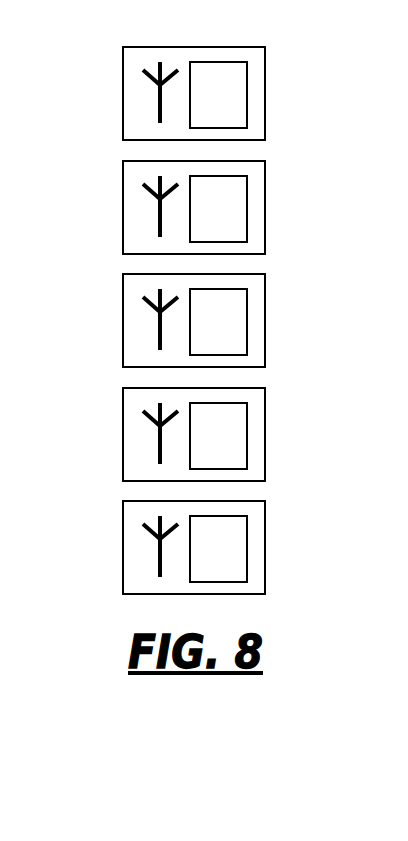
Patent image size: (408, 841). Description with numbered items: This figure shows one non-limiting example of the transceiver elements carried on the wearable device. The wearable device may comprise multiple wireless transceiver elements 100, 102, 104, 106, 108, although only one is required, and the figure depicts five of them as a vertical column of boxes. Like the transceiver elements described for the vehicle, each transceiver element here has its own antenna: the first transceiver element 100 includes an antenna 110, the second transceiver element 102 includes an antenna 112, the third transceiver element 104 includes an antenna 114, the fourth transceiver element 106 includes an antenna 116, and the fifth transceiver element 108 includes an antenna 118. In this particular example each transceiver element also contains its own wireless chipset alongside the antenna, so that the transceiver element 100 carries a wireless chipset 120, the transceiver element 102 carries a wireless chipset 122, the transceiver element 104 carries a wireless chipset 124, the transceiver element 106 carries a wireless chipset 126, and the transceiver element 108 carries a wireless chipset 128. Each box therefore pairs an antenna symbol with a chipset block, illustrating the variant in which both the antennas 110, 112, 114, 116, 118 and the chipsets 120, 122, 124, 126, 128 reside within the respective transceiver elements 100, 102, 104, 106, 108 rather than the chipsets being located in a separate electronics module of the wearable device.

The wireless transceiver element 100 is at (111, 63).
The wireless transceiver element 102 is at (111, 177).
The wireless transceiver element 104 is at (111, 290).
The wireless transceiver element 106 is at (111, 404).
The wireless transceiver element 108 is at (111, 517).
The antenna 110 is at (157, 108).
The antenna 112 is at (157, 222).
The antenna 114 is at (157, 335).
The antenna 116 is at (157, 449).
The antenna 118 is at (157, 562).
The wireless chipset 120 is at (200, 105).
The wireless chipset 122 is at (200, 219).
The wireless chipset 124 is at (200, 332).
The wireless chipset 126 is at (200, 446).
The wireless chipset 128 is at (200, 559).